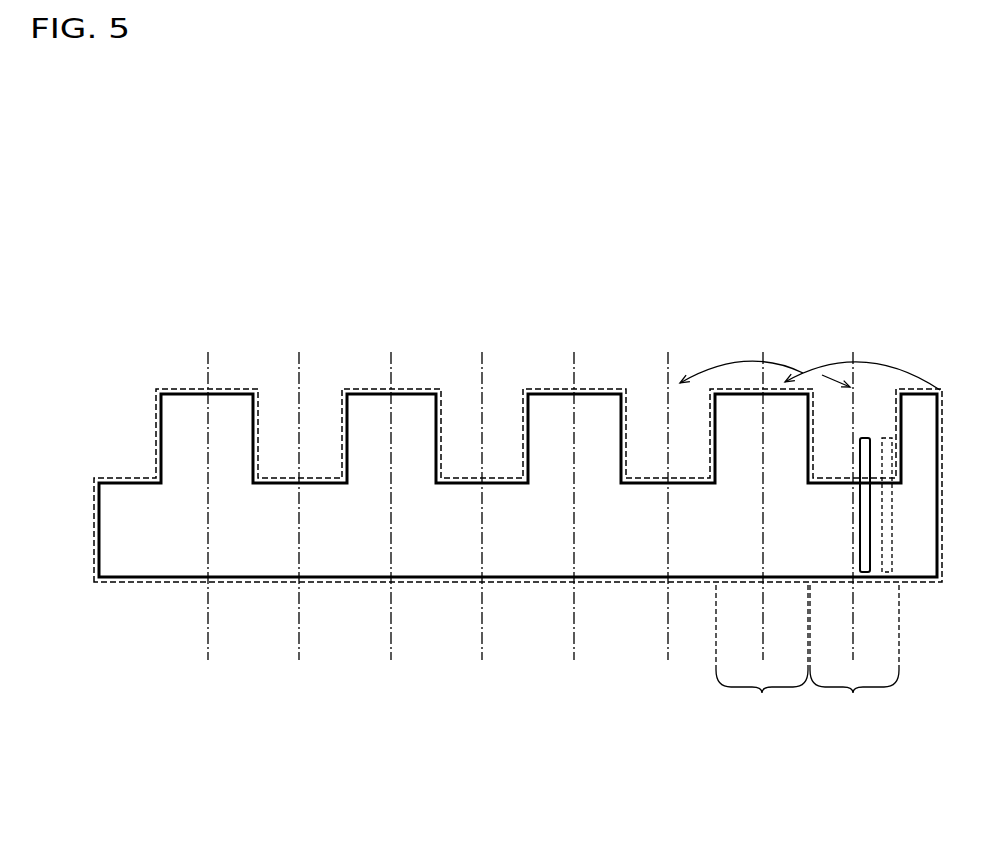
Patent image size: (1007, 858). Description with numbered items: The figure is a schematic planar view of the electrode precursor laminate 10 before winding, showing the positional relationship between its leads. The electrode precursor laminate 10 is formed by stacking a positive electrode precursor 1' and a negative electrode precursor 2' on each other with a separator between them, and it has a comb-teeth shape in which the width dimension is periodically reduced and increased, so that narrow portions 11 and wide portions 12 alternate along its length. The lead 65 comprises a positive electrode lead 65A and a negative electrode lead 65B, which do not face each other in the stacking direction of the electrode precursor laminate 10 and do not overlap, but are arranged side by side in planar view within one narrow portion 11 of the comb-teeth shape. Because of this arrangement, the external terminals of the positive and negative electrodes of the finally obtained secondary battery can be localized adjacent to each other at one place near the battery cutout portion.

The electrode precursor laminate 10 is at (518, 367).
The positive electrode precursor 1' is at (518, 429).
The negative electrode precursor 2' is at (518, 426).
The lead 65 is at (821, 370).
The positive electrode lead 65A is at (862, 437).
The negative electrode lead 65B is at (885, 438).
The wide portion 12 is at (762, 657).
The narrow portion 11 is at (854, 657).